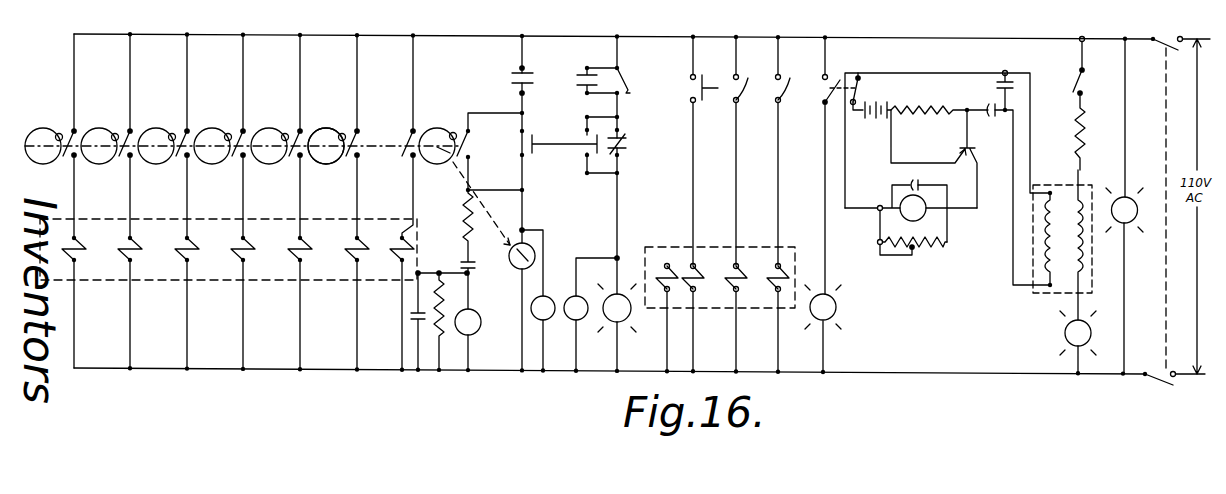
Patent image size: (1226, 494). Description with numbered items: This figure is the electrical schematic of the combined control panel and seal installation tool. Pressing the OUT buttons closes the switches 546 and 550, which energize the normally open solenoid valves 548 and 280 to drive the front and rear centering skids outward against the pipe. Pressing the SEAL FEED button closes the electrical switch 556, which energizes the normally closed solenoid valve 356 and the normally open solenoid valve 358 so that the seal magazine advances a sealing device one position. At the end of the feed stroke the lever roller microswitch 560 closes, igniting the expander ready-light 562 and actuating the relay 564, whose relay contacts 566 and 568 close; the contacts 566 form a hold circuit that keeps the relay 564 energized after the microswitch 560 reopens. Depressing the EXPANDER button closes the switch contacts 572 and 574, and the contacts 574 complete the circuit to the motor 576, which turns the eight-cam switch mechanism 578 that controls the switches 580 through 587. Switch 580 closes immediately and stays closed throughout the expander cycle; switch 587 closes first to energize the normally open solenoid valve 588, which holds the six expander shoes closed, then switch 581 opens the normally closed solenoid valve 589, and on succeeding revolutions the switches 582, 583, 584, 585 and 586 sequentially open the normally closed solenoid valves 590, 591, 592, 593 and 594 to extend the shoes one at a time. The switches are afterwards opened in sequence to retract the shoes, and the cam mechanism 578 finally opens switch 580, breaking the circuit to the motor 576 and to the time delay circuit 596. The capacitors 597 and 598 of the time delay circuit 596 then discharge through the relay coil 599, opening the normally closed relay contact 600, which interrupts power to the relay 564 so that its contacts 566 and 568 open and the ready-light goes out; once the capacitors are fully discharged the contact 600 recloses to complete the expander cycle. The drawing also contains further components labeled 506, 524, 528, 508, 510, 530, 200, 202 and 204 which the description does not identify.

The switch 587 is at (74, 131).
The switch 586 is at (130, 131).
The switch 585 is at (187, 131).
The switch 584 is at (243, 131).
The switch 583 is at (300, 131).
The switch 582 is at (357, 131).
The switch 581 is at (413, 131).
The cam-operated switch mechanism 578 is at (341, 118).
The switch 580 is at (468, 147).
The normally open solenoid valve 588 is at (70, 252).
The normally closed solenoid valve 594 is at (125, 252).
The normally closed solenoid valve 593 is at (180, 252).
The normally closed solenoid valve 592 is at (238, 252).
The normally closed solenoid valve 591 is at (295, 252).
The normally closed solenoid valve 590 is at (350, 252).
The normally closed solenoid valve 589 is at (398, 252).
The relay contact 568 is at (517, 85).
The switch contact 574 is at (522, 145).
The relay contact 566 is at (577, 88).
The lever roller microswitch 560 is at (630, 88).
The switch contact 572 is at (585, 152).
The normally closed relay contact 600 is at (628, 146).
The capacitor 598 is at (472, 276).
The relay coil 599 is at (474, 311).
The time delay circuit 596 is at (478, 346).
The capacitor 597 is at (422, 325).
The motor 576 is at (535, 252).
The relay 564 is at (572, 322).
The expander ready-light 562 is at (621, 323).
The electrical switch 556 is at (718, 88).
The switch 550 is at (748, 84).
The electrical switch 546 is at (790, 84).
The switch 524 is at (835, 80).
The lamp 528 is at (836, 308).
The timer circuit 510 is at (990, 141).
The relay / lamp 508 is at (879, 210).
The potentiometer 530 is at (930, 244).
The relay coil 204 is at (1050, 262).
The relay coil 200 is at (1083, 250).
The power supply enclosure 202 is at (1181, 210).
The main switch 506 is at (1158, 37).
The normally open solenoid valve 358 is at (673, 262).
The normally closed solenoid valve 356 is at (699, 272).
The normally open solenoid valve 280 is at (742, 264).
The normally open solenoid valve 548 is at (782, 263).